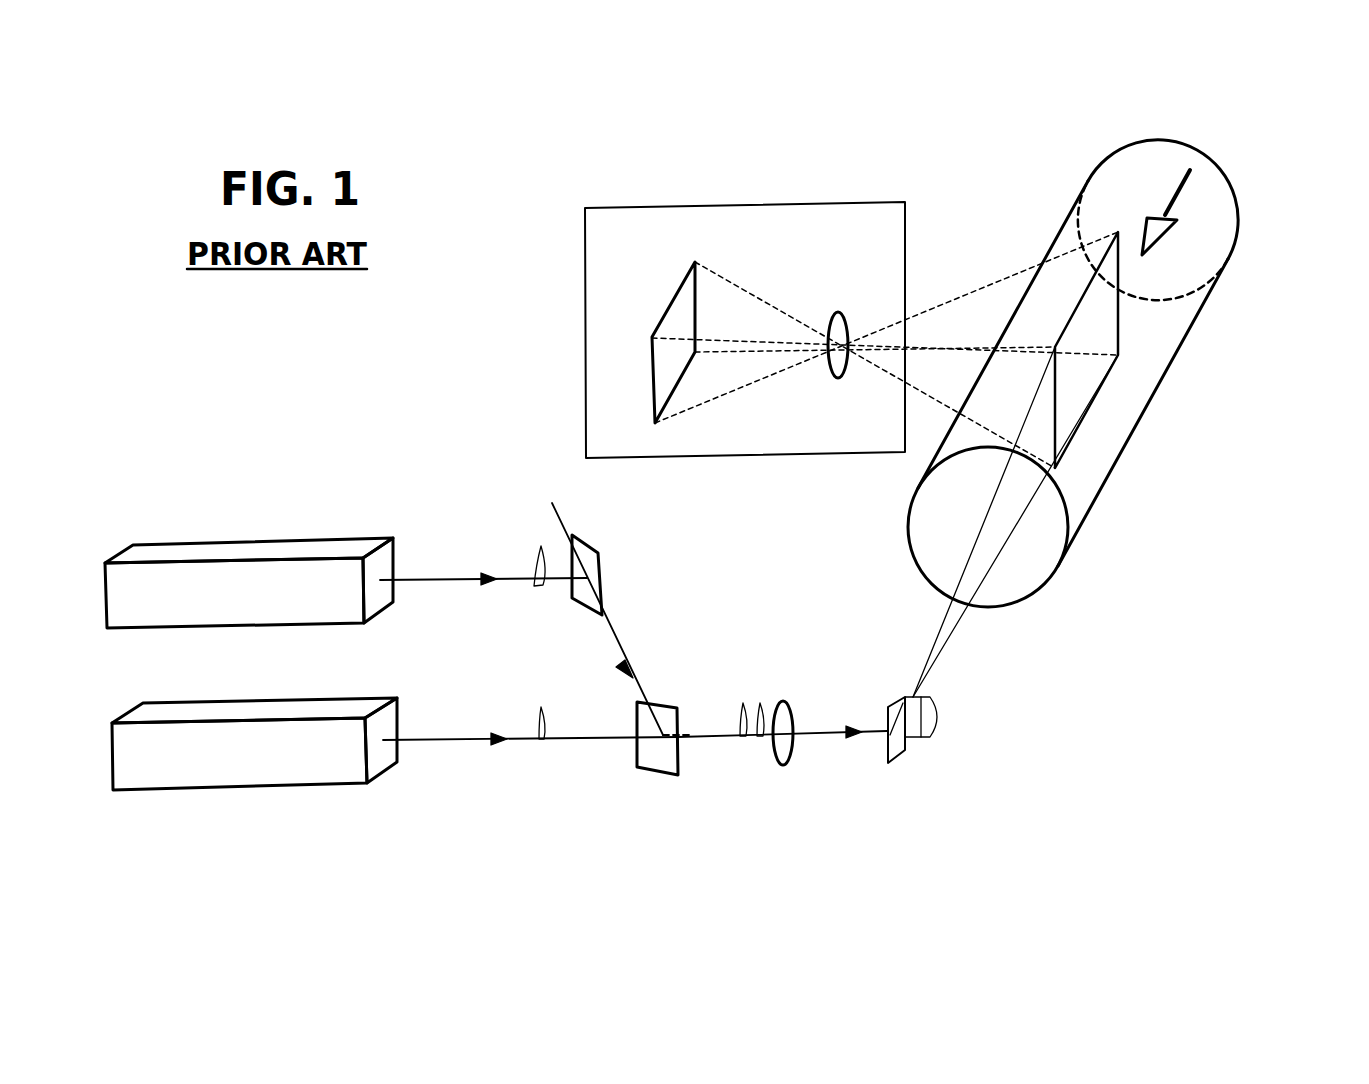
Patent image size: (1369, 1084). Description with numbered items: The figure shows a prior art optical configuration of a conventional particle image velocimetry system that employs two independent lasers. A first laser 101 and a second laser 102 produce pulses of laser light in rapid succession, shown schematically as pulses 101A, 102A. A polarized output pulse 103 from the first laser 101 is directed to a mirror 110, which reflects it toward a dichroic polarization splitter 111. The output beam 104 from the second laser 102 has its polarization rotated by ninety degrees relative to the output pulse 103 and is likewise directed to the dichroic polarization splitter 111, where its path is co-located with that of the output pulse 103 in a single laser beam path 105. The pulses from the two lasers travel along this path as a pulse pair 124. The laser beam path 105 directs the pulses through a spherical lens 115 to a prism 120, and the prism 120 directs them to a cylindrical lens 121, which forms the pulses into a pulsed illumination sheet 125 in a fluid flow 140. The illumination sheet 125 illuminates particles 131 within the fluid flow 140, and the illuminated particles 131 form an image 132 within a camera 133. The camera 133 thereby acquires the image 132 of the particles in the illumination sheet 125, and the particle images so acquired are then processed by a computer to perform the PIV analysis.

The first laser 101 is at (298, 537).
The second laser 102 is at (305, 783).
The polarized output pulse 103 is at (460, 578).
The output beam 104 is at (463, 739).
The pulse 101A is at (534, 587).
The pulse 102A is at (542, 741).
The mirror 110 is at (588, 542).
The dichroic polarization splitter 111 is at (657, 775).
The laser beam path 105 is at (718, 736).
The pulse pair 124 is at (760, 700).
The spherical lens 115 is at (785, 765).
The prism 120 is at (895, 763).
The cylindrical lens 121 is at (940, 722).
The illumination sheet 125 is at (950, 627).
The particles 131 is at (1093, 413).
The image 132 is at (677, 287).
The camera 133 is at (788, 213).
The fluid flow 140 is at (1183, 188).